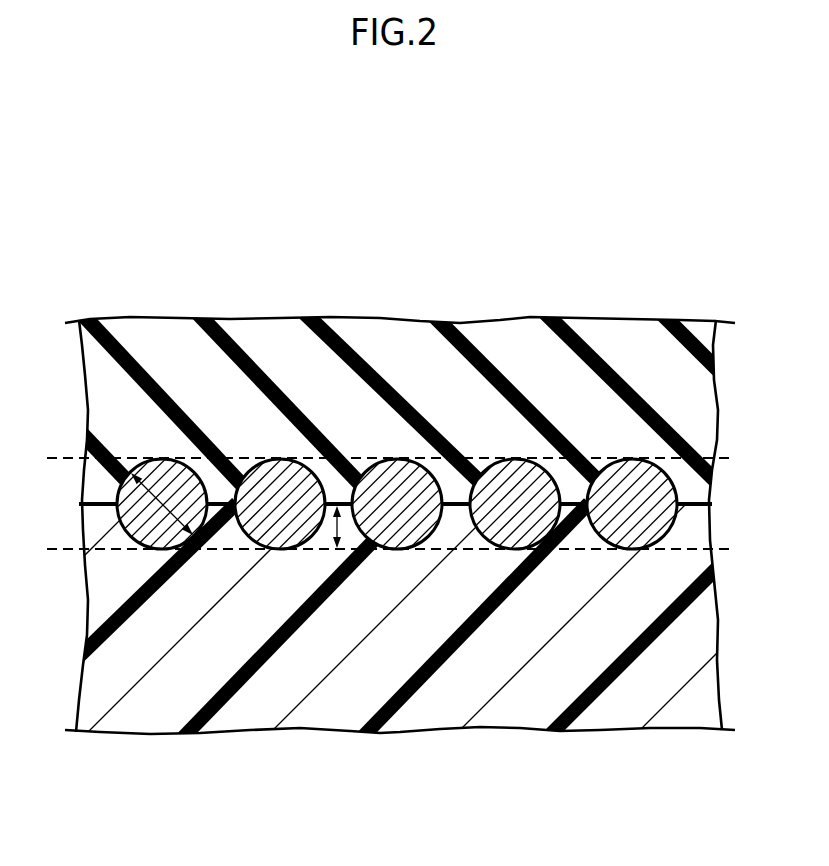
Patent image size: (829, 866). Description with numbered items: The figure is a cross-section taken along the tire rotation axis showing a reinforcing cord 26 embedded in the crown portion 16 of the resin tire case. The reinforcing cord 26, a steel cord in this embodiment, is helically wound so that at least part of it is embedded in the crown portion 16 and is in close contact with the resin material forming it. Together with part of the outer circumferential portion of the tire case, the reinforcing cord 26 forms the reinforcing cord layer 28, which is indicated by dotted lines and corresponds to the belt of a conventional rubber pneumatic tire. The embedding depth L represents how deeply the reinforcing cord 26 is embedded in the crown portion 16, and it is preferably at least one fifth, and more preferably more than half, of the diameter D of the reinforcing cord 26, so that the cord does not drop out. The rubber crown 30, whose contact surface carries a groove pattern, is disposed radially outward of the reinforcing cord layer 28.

The crown portion 16 is at (503, 713).
The crown 30 is at (414, 374).
The reinforcing cord 26 is at (137, 462).
The reinforcing cord layer 28 is at (354, 452).
The diameter of the reinforcing cord D is at (120, 530).
The embedding depth L is at (333, 528).